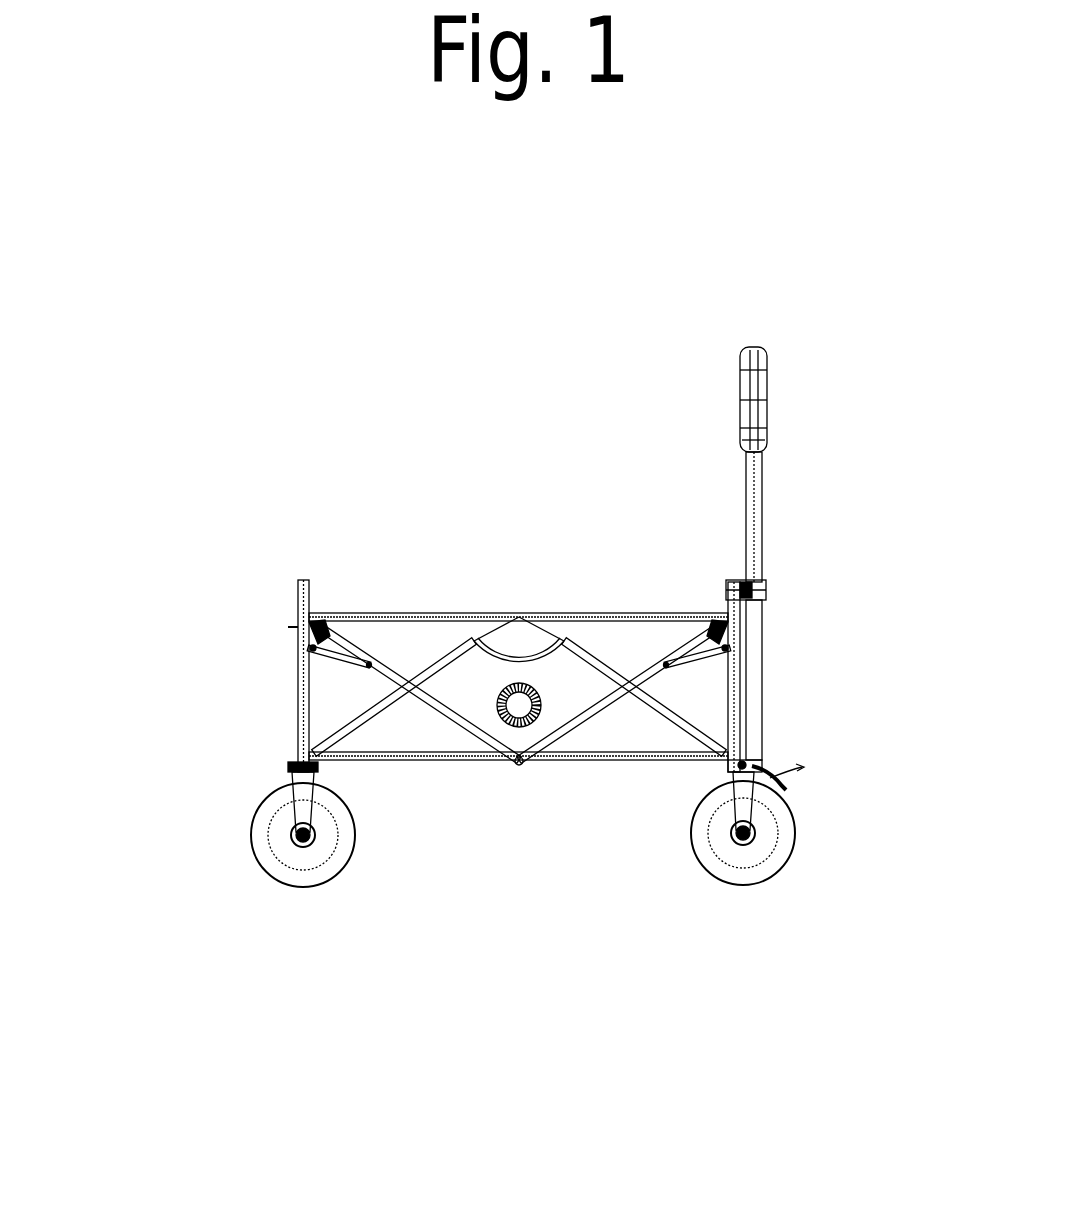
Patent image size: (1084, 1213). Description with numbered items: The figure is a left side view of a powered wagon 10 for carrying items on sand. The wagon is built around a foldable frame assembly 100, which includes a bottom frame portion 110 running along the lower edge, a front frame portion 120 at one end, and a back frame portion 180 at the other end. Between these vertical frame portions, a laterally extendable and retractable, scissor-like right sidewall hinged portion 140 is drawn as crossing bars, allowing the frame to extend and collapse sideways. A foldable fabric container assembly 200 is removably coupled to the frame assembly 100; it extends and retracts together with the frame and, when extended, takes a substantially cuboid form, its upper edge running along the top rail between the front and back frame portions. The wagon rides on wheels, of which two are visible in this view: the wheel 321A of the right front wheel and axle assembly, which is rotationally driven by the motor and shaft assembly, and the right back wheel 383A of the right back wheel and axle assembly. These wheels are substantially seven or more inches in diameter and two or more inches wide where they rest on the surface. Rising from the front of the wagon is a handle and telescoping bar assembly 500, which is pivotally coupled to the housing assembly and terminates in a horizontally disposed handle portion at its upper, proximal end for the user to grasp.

The powered wagon 10 is at (138, 242).
The foldable frame assembly 100 is at (283, 701).
The bottom frame portion 110 is at (420, 760).
The front frame portion 120 is at (723, 582).
The right sidewall hinged portion 140 is at (578, 715).
The back frame portion 180 is at (293, 657).
The foldable fabric container assembly 200 is at (372, 617).
The wheel 321A is at (740, 883).
The right back wheel 383A is at (280, 858).
The handle and telescoping bar assembly 500 is at (767, 478).